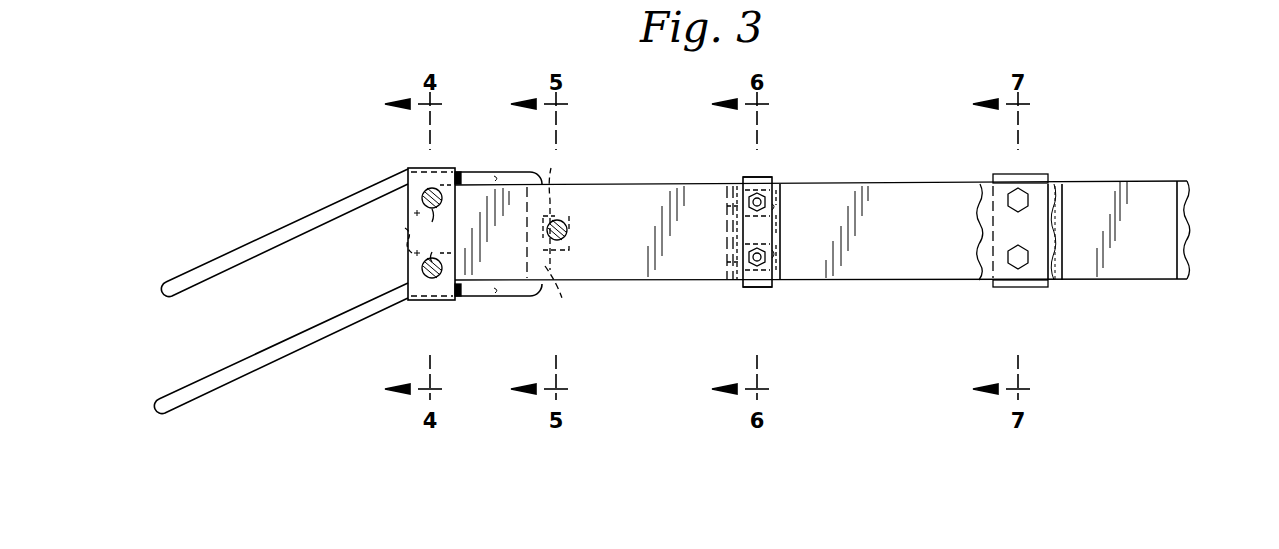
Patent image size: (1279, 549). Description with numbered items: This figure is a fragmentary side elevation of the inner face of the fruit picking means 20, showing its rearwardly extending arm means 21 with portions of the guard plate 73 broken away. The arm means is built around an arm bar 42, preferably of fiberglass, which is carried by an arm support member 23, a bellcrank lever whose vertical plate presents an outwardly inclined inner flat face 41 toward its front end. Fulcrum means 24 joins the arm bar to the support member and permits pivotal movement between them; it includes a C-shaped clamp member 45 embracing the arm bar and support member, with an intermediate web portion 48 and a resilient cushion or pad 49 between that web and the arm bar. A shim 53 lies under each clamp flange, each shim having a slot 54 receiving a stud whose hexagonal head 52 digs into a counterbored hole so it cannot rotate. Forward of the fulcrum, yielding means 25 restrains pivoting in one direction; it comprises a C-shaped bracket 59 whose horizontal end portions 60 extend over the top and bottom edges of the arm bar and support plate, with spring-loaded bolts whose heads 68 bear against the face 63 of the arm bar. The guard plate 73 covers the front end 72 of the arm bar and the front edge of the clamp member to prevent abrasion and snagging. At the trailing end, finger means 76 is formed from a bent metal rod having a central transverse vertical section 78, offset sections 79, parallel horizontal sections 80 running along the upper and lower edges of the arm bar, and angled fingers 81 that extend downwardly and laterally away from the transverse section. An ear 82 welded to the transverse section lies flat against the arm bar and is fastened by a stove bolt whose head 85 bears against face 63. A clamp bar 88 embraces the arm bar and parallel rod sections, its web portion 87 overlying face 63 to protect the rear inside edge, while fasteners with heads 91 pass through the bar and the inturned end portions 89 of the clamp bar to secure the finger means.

The fruit picking means 20 is at (1125, 140).
The arm means 21 is at (618, 181).
The arm support member 23 is at (1192, 186).
The fulcrum means 24 is at (778, 176).
The yielding means 25 is at (1047, 172).
The inclined inner flat face 41 is at (1145, 245).
The arm bar 42 is at (674, 272).
The clamp member 45 is at (742, 183).
The web portion 48 is at (770, 231).
The cushion or pad 49 is at (740, 186).
The hexagonal heads 52 is at (742, 304).
The shim 53 is at (735, 256).
The slot 54 is at (776, 200).
The C-shaped bracket 59 is at (993, 178).
The horizontal end portions 60 is at (1007, 174).
The face of arm bar 63 is at (918, 250).
The bolt head 68 is at (1018, 212).
The front end of arm bar 72 is at (1056, 204).
The guard plate 73 is at (980, 212).
The finger means 76 is at (304, 215).
The central transverse vertical section 78 is at (562, 289).
The offset sections 79 is at (514, 172).
The parallel horizontal sections 80 is at (470, 172).
The angled fingers 81 is at (288, 233).
The ear 82 is at (553, 175).
The head 85 is at (566, 238).
The web portion 87 is at (408, 262).
The clamp bar 88 is at (408, 168).
The inturned end portions 89 is at (406, 236).
The head 91 is at (428, 225).